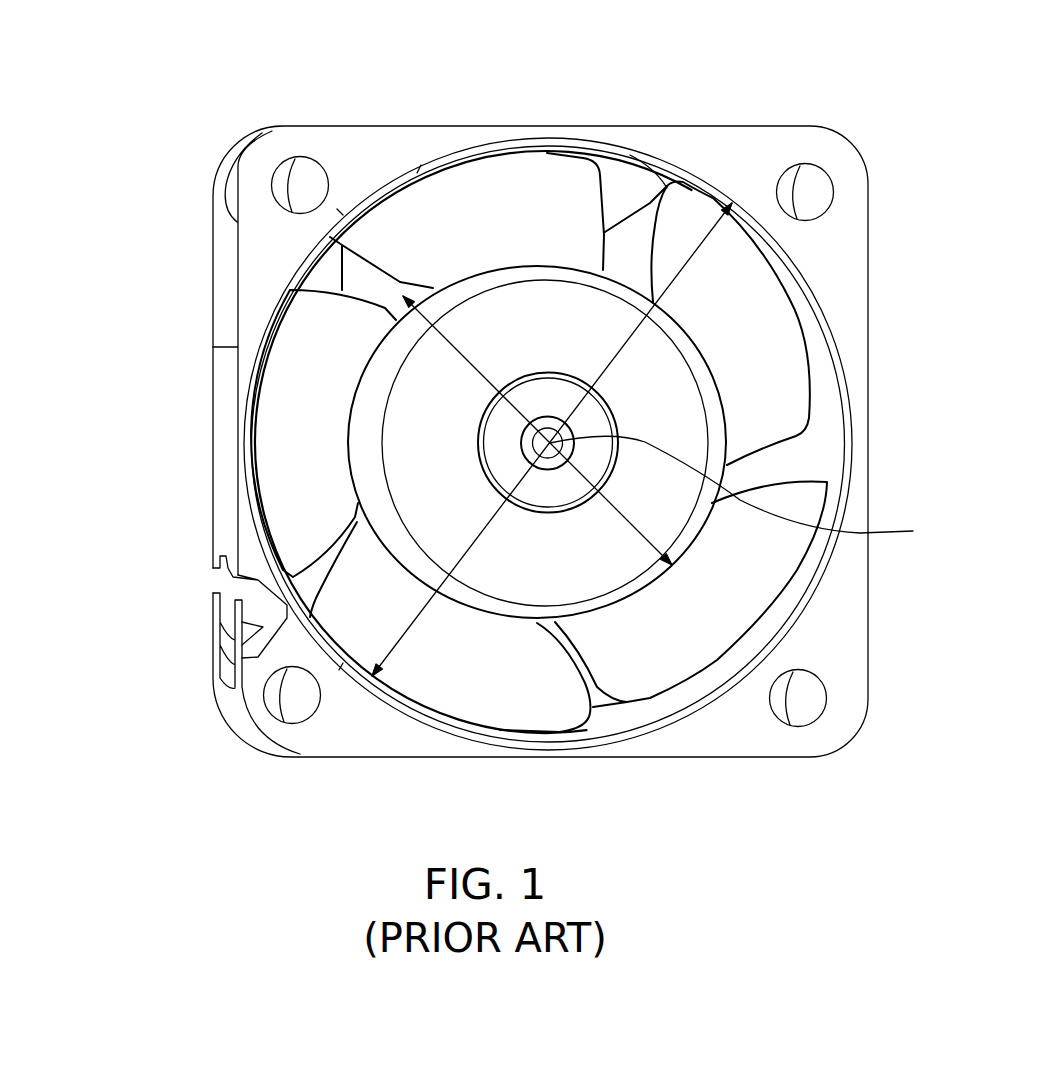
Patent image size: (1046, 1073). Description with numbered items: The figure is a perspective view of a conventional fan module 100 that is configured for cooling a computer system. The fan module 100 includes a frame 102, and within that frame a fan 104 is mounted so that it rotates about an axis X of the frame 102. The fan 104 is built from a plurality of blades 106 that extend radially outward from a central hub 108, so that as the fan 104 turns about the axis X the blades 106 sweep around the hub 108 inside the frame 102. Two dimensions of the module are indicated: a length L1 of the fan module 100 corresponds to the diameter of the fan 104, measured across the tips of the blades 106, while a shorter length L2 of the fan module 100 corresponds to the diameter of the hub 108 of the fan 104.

The fan module 100 is at (352, 57).
The frame 102 is at (736, 148).
The fan 104 is at (742, 304).
The blades 106 is at (410, 250).
The hub 108 is at (673, 522).
The length L1 is at (413, 620).
The length L2 is at (458, 348).
The axis X is at (744, 491).